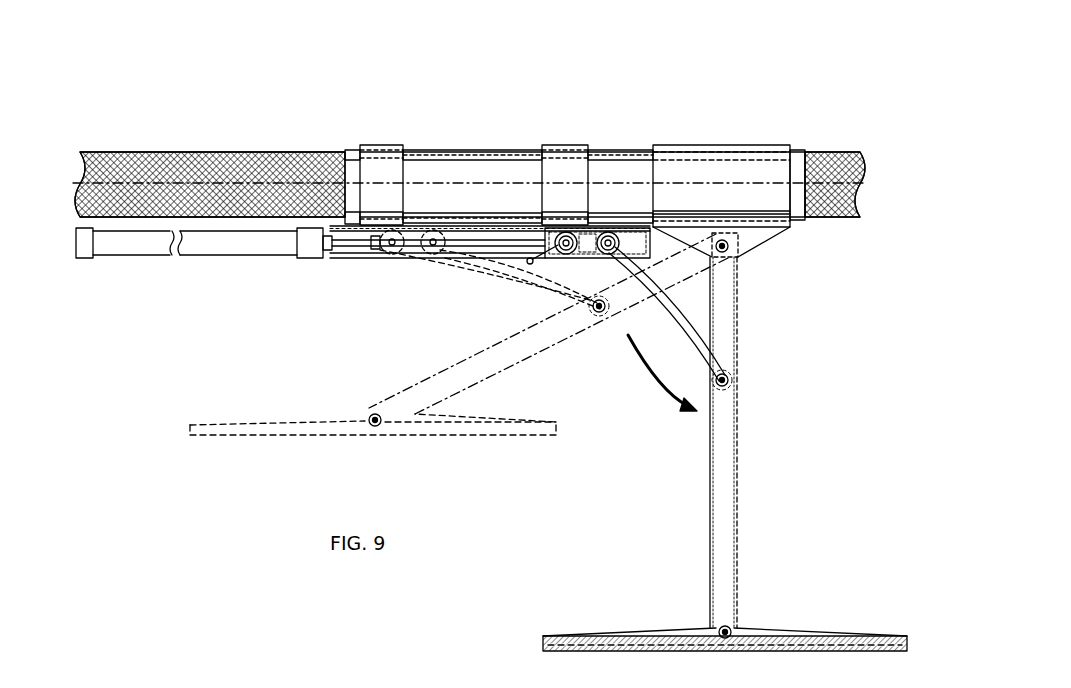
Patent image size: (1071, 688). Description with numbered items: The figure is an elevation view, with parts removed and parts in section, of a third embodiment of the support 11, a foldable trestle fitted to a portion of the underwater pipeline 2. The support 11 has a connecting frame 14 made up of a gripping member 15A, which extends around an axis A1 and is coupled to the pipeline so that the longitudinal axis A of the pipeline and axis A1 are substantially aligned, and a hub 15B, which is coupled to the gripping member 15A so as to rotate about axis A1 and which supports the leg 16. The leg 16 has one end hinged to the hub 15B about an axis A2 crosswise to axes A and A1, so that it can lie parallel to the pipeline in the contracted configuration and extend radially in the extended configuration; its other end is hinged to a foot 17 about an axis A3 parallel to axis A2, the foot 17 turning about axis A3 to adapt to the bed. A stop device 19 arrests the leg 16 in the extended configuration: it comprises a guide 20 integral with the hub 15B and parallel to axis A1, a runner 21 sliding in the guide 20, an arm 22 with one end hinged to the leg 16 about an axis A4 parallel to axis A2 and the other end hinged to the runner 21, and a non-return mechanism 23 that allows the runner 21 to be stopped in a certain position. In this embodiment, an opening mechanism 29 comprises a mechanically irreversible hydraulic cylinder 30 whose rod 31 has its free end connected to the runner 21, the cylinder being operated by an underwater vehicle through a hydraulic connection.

The underwater pipeline 2 is at (240, 162).
The longitudinal axis of the underwater pipeline A is at (148, 185).
The support 11 is at (531, 439).
The connecting frame 14 is at (575, 118).
The gripping member 15A is at (604, 143).
The hub 15B is at (745, 136).
The leg 16 is at (525, 382).
The foot 17 is at (206, 426).
The stop device 19 is at (540, 303).
The guide 20 is at (370, 258).
The runner 21 is at (408, 226).
The arm 22 is at (515, 268).
The non-return mechanism 23 is at (598, 270).
The opening mechanism 29 is at (312, 294).
The hydraulic cylinder 30 is at (305, 250).
The rod 31 is at (505, 238).
The axis of the gripping member A1 is at (487, 180).
The hinge axis of the leg A2 is at (722, 246).
The hinge axis of the foot A3 is at (725, 632).
The hinge axis of the arm A4 is at (722, 380).